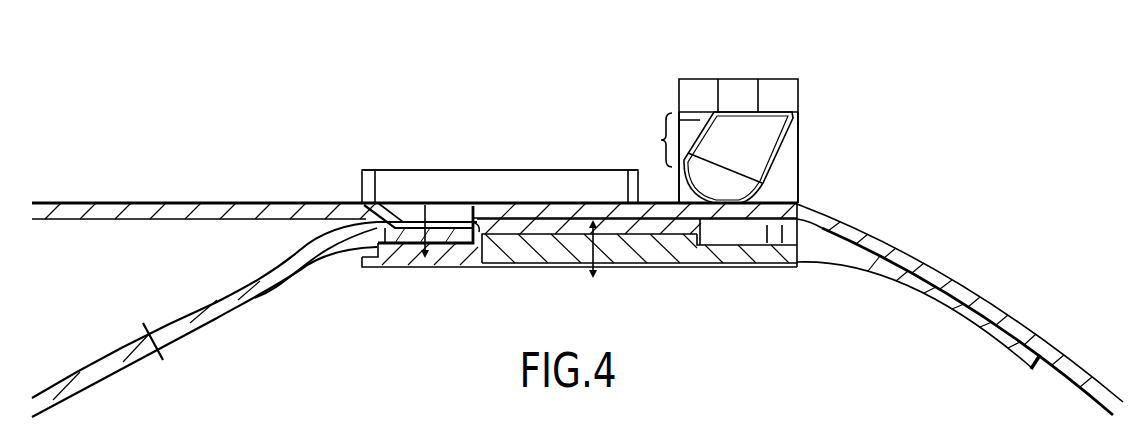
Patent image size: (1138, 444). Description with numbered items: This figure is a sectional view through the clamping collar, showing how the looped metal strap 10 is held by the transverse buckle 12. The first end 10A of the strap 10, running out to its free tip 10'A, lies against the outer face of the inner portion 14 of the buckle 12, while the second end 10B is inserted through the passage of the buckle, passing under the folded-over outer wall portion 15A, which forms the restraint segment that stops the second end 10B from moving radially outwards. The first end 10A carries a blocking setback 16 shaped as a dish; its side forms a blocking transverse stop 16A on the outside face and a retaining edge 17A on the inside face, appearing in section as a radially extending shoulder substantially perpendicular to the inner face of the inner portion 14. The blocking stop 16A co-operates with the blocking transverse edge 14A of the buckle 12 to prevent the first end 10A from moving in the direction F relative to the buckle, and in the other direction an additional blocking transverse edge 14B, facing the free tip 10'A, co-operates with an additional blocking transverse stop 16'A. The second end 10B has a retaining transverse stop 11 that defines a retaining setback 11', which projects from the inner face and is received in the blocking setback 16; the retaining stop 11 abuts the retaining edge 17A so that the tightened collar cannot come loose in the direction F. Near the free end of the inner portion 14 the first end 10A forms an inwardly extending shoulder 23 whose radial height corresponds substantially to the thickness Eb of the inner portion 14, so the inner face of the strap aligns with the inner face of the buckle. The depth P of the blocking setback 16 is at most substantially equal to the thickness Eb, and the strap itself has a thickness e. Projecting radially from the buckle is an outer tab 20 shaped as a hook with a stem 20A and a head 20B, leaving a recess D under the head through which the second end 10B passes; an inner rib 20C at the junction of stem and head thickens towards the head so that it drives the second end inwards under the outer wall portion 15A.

The looped metal strap 10 is at (578, 310).
The first end of the strap 10A is at (973, 322).
The free tip of the first end 10'A is at (1018, 386).
The second end of the strap 10B is at (180, 212).
The retaining transverse stop 11 is at (443, 190).
The retaining setback 11' is at (409, 190).
The transverse buckle 12 is at (529, 152).
The inner portion of the buckle 14 is at (560, 252).
The blocking transverse edge 14A is at (478, 247).
The additional blocking transverse edge 14B is at (705, 252).
The outer wall portion 15A is at (453, 182).
The blocking setback 16 is at (578, 279).
The blocking transverse stop 16A is at (490, 230).
The additional blocking transverse stop 16'A is at (709, 267).
The retaining edge 17A is at (463, 218).
The outer tab 20 is at (830, 173).
The stem 20A is at (798, 151).
The head 20B is at (742, 79).
The inner rib 20C is at (763, 137).
The inwardly extending shoulder 23 is at (267, 283).
The recess D is at (661, 140).
The direction F is at (438, 108).
The depth of the blocking setback P is at (425, 258).
The thickness of the inner portion of the buckle Eb is at (605, 268).
The thickness of the strap e is at (143, 325).